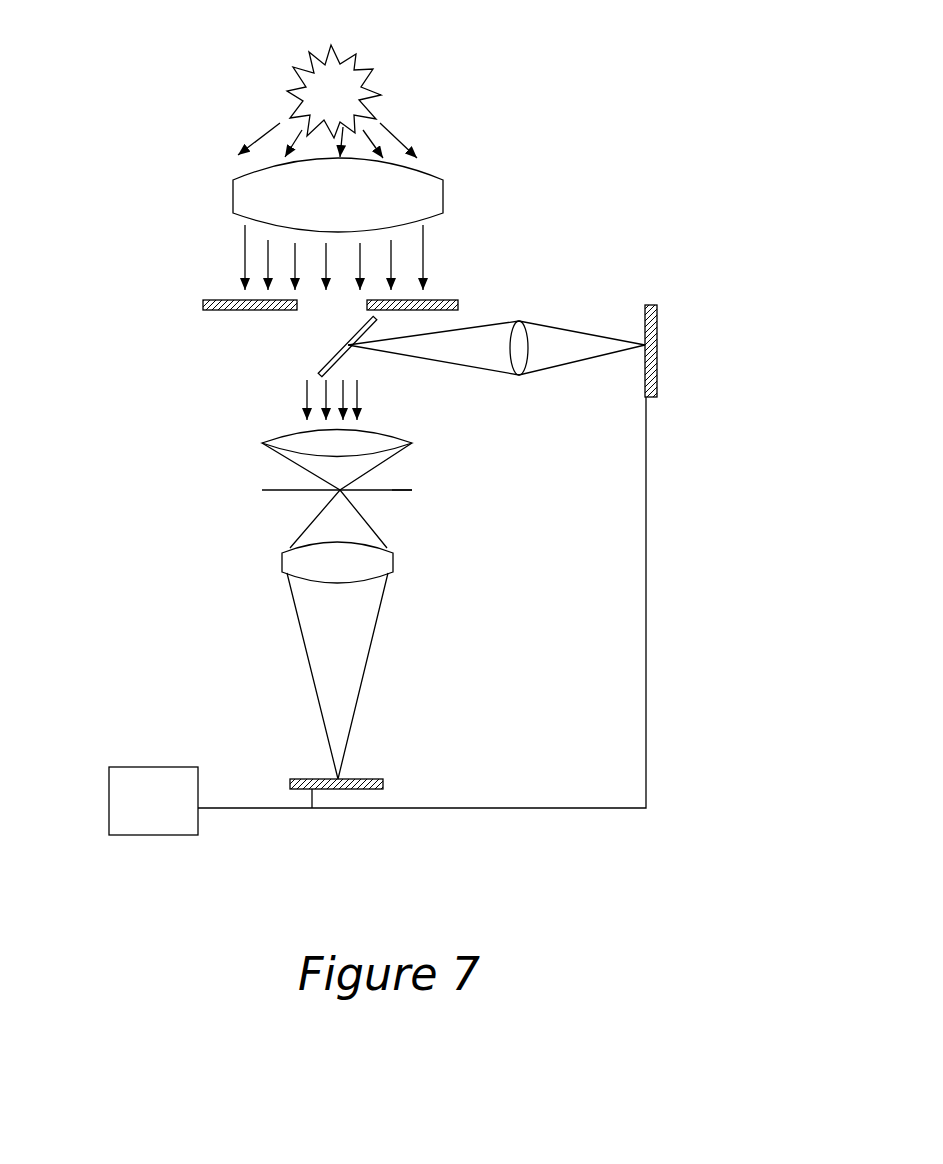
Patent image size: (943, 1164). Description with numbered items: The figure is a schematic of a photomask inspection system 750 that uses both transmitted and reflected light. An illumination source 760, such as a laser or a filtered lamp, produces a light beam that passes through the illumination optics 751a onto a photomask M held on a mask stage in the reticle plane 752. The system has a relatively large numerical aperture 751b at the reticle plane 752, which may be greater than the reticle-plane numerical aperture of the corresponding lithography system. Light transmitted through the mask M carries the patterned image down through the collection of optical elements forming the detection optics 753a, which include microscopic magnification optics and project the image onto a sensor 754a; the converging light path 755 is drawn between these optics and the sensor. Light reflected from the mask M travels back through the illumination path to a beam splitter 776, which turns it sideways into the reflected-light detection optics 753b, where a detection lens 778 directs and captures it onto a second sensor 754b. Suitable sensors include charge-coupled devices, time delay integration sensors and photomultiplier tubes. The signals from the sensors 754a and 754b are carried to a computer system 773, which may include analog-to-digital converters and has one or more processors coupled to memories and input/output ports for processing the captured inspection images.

The inspection system 750 is at (473, 88).
The illumination source 760 is at (363, 65).
The illumination optics 751a is at (177, 452).
The beam splitter 776 is at (345, 346).
The detection optics 753b is at (378, 320).
The detection lens 778 is at (519, 348).
The sensor 754b is at (651, 302).
The numerical aperture 751b is at (373, 472).
The reticle plane 752 is at (252, 491).
The photomask M is at (392, 490).
The detection optics 753a is at (227, 500).
The collected light cone 755 is at (337, 657).
The sensor 754a is at (365, 775).
The computer system 773 is at (377, 616).